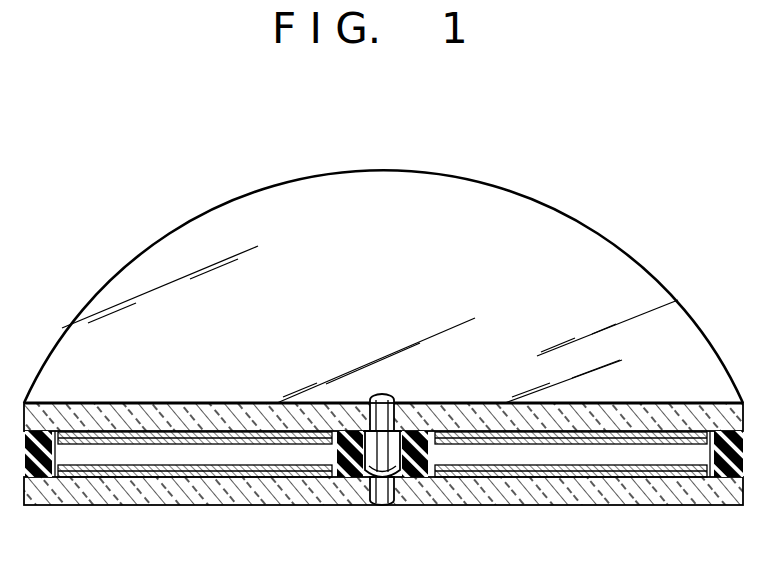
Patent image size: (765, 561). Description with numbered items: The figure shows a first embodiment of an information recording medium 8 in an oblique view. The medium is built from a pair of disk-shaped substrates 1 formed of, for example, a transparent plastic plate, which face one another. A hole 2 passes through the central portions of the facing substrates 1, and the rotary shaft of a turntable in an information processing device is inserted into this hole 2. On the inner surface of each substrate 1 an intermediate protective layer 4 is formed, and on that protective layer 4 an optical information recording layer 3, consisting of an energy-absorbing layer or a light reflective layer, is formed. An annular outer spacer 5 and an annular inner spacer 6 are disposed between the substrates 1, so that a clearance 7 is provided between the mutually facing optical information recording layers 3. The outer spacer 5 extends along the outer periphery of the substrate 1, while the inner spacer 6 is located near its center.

The disk-shaped substrate 1 is at (654, 415).
The hole 2 is at (390, 398).
The optical information recording layer 3 is at (524, 447).
The intermediate protective layer 4 is at (481, 433).
The annular outer spacer 5 is at (30, 470).
The annular inner spacer 6 is at (345, 478).
The clearance 7 is at (207, 458).
The information recording medium 8 is at (522, 191).